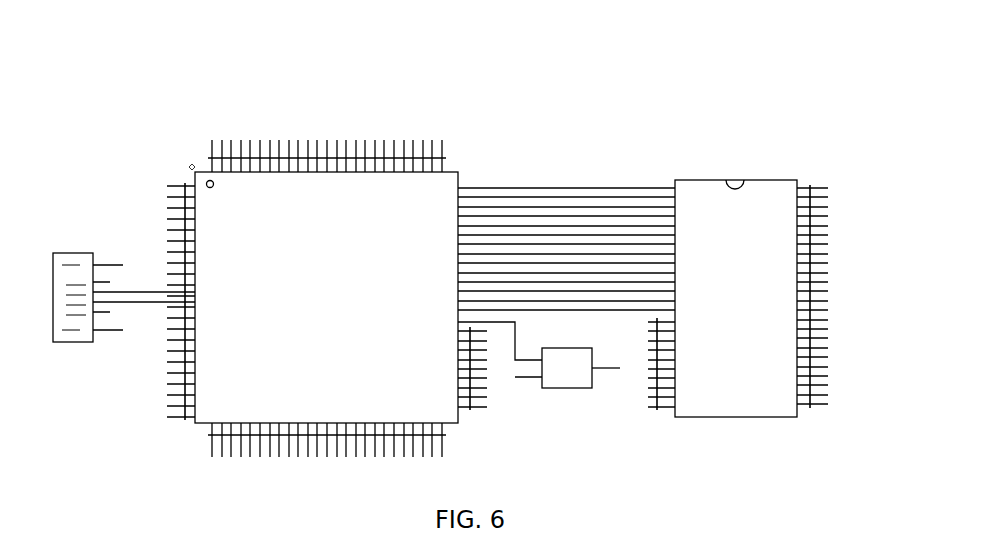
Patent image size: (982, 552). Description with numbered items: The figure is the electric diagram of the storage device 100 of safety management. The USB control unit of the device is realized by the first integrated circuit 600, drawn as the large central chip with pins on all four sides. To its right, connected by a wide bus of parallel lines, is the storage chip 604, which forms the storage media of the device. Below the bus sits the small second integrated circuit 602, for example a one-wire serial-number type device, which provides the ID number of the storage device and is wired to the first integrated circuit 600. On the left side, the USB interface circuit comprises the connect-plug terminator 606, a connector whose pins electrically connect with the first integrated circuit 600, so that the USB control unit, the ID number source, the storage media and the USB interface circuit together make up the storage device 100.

The storage device 100 is at (243, 106).
The integrated circuit U1 600 is at (455, 170).
The integrated circuit U2 602 is at (558, 388).
The storage chip U3 604 is at (697, 180).
The connect-plug terminator J4 606 is at (78, 253).